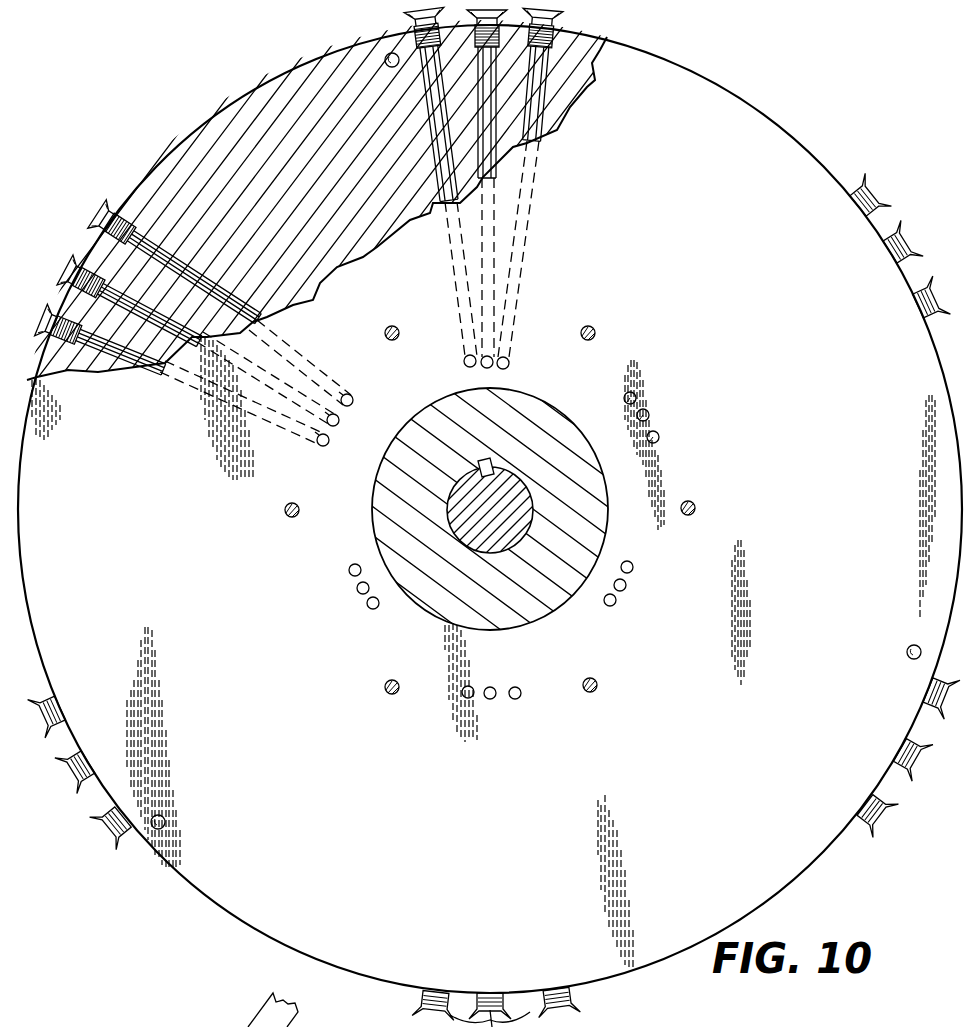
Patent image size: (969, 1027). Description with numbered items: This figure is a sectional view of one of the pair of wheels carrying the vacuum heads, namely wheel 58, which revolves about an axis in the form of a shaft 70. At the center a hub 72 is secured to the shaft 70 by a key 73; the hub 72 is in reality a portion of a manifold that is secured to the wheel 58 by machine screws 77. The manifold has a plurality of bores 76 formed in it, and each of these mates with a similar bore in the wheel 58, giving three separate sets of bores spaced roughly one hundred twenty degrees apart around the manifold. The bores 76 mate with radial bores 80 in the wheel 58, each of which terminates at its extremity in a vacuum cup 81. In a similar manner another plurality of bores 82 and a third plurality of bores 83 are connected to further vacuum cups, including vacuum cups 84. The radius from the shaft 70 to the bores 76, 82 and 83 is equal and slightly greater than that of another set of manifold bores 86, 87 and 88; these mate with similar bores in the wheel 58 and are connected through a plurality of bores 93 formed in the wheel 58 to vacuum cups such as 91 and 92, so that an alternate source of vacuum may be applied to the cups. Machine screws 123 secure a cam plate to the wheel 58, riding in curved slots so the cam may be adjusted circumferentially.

The wheel 58 is at (735, 92).
The bores 93 is at (550, 63).
The bores 86 is at (505, 366).
The machine screws 123 is at (391, 52).
The vacuum cups 84 is at (92, 215).
The radial bores 80 is at (163, 267).
The bores 82 is at (352, 405).
The hub 72 is at (592, 608).
The shaft 70 is at (520, 542).
The key 73 is at (482, 461).
The machine screws 77 is at (392, 325).
The bores 76 is at (636, 398).
The bores 88 is at (633, 570).
The bores 87 is at (350, 574).
The bores 83 is at (472, 697).
The vacuum cup 81 is at (925, 295).
The vacuum cups 92 is at (935, 712).
The vacuum cups 91 is at (48, 730).